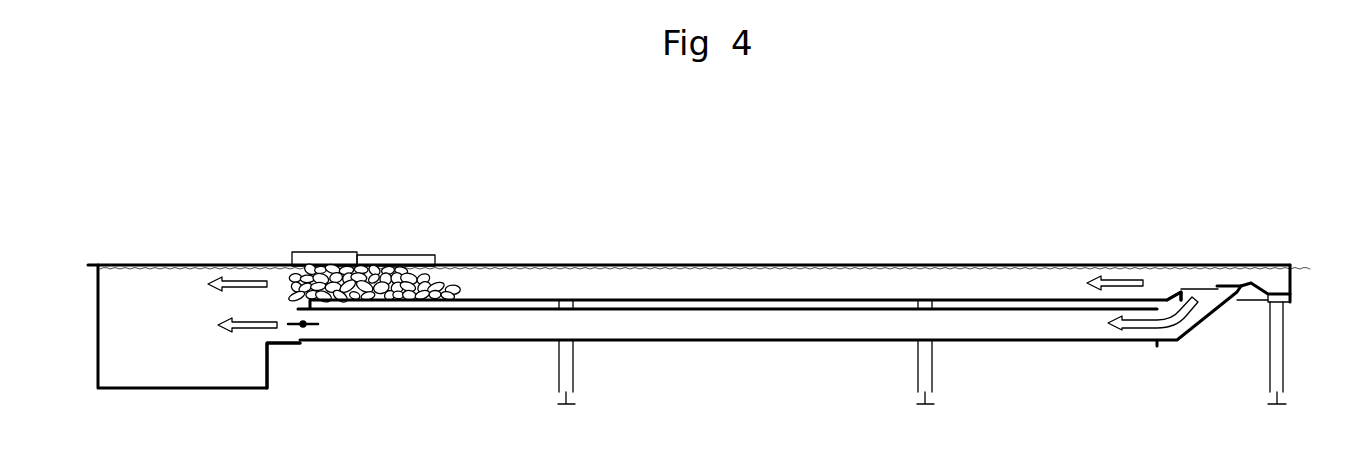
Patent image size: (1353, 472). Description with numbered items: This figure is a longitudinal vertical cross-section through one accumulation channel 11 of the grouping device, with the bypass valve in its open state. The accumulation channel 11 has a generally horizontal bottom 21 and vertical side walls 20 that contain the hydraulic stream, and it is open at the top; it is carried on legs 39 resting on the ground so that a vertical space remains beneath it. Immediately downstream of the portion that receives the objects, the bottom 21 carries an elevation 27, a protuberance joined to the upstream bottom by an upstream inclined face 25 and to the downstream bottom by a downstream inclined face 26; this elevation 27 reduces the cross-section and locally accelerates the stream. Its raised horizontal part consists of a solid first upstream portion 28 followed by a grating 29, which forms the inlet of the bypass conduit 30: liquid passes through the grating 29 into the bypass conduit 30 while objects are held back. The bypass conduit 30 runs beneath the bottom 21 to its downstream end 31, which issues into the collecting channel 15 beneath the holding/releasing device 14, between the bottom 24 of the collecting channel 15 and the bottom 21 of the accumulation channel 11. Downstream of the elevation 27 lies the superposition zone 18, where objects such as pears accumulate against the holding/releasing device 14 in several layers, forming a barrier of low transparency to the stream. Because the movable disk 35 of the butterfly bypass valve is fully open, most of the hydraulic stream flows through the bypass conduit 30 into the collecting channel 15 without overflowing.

The accumulation channel 11 is at (685, 232).
The holding/releasing device 14 is at (295, 287).
The collecting channel 15 is at (150, 328).
The superposition zone 18 is at (558, 279).
The vertical side walls 20 is at (987, 277).
The bottom 21 is at (940, 300).
The bottom of the collecting channel 24 is at (192, 390).
The upstream inclined face 25 is at (1267, 291).
The downstream inclined face 26 is at (1173, 293).
The elevation 27 is at (1205, 278).
The first upstream portion 28 is at (1228, 285).
The grating 29 is at (1202, 285).
The bypass conduit 30 is at (735, 330).
The downstream end of the bypass conduit 31 is at (317, 330).
The movable disk 35 is at (290, 326).
The legs 39 is at (565, 373).